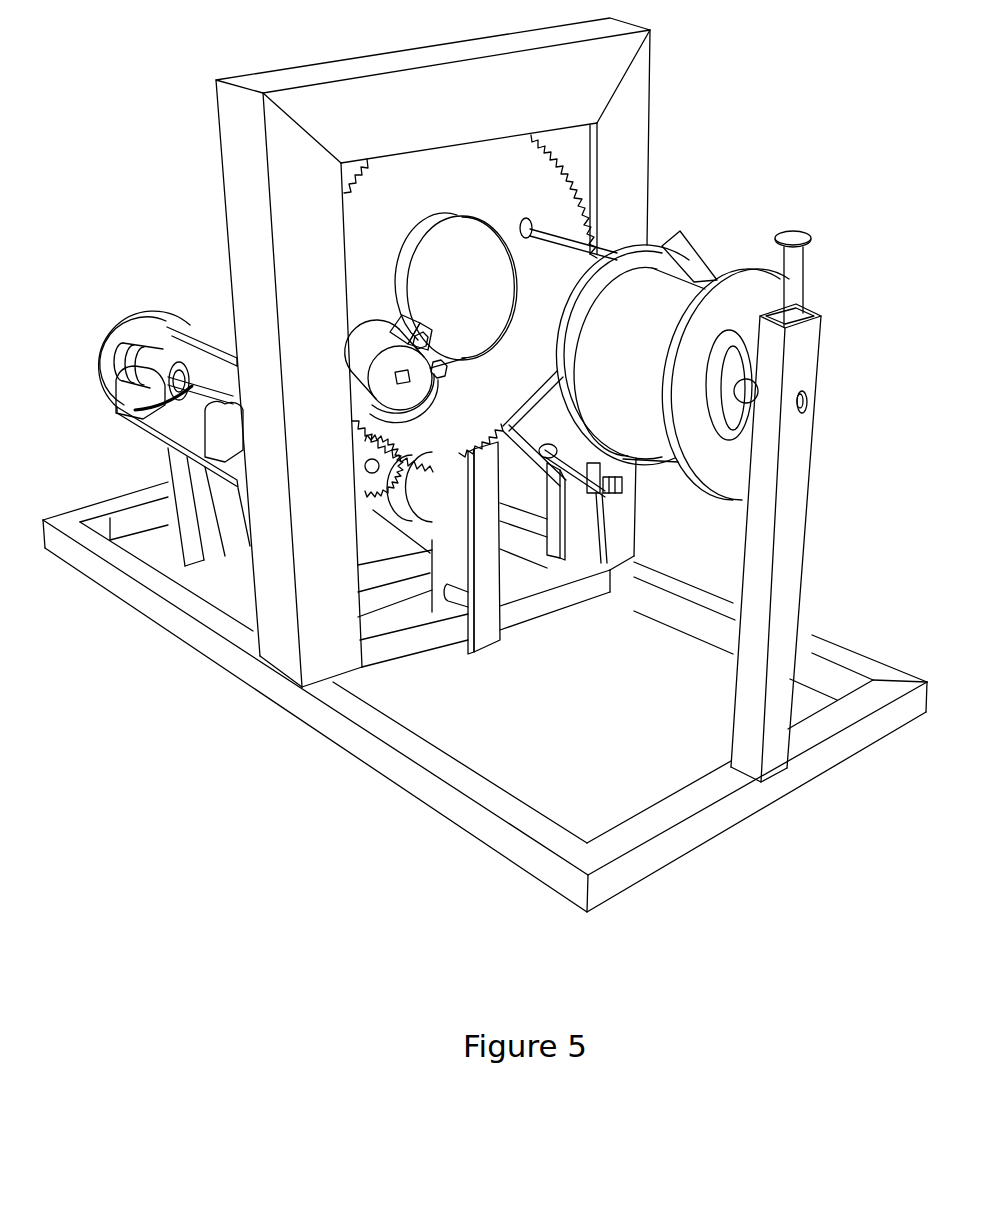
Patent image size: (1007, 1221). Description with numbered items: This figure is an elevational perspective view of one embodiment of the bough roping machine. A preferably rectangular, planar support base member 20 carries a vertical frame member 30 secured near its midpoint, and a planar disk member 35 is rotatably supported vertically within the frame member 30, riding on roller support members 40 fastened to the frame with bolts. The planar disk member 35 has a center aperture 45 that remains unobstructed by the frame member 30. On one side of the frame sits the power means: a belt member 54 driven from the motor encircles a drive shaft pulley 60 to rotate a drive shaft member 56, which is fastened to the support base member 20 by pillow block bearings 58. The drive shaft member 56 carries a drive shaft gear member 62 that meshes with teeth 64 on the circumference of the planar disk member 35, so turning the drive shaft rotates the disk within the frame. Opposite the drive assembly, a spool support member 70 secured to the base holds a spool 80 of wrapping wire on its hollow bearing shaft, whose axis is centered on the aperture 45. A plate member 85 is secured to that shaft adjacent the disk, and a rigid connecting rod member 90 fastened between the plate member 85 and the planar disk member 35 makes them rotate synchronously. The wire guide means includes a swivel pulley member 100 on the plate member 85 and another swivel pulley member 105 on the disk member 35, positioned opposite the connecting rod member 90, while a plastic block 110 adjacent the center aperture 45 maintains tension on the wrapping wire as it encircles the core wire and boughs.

The support base member 20 is at (233, 657).
The vertical frame member 30 is at (433, 343).
The planar disk member 35 is at (413, 197).
The roller support members 40 is at (448, 475).
The center aperture 45 is at (475, 227).
The belt member 54 is at (207, 337).
The drive shaft member 56 is at (118, 413).
The pillow block bearings 58 is at (153, 368).
The drive shaft pulley 60 is at (137, 333).
The drive shaft gear member 62 is at (366, 464).
The teeth 64 is at (562, 157).
The spool support member 70 is at (803, 368).
The spool 80 is at (747, 297).
The plate member 85 is at (693, 264).
The rigid connecting rod member 90 is at (570, 238).
The swivel pulley member 100 is at (600, 497).
The swivel pulley member 105 is at (388, 383).
The plastic block 110 is at (403, 326).